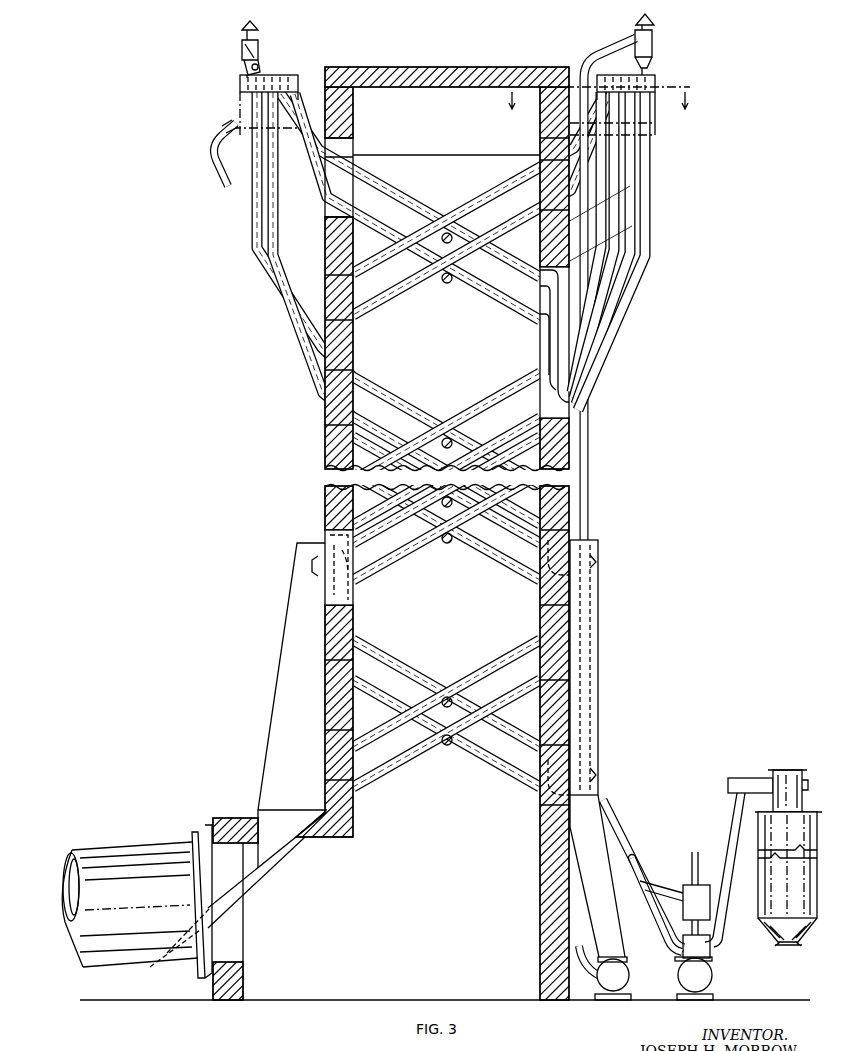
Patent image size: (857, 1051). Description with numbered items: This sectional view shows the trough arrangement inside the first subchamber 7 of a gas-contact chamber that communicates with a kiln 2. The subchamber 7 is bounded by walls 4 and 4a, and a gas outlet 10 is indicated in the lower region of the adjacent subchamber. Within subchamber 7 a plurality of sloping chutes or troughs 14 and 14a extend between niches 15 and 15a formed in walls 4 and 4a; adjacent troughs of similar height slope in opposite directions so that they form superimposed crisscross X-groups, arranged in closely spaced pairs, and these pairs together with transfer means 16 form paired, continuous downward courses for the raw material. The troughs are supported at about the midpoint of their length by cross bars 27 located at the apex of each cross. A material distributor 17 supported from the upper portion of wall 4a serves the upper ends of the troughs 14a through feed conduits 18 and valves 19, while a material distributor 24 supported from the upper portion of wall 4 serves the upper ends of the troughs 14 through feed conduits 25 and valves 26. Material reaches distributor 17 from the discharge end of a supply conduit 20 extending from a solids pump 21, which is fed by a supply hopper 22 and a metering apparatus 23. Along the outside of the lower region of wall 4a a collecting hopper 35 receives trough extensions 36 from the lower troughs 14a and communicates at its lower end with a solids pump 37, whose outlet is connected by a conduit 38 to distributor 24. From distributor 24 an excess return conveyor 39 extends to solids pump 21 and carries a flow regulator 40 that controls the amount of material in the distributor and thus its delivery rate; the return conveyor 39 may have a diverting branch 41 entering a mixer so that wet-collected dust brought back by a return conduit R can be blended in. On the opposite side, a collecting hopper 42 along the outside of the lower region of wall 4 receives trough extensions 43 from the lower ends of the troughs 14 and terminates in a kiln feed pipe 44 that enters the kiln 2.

The kiln 2 is at (118, 846).
The wall 4 is at (325, 448).
The wall 4a is at (570, 440).
The subchamber 7 is at (428, 500).
The gas outlet 10 is at (522, 123).
The troughs 14 is at (380, 197).
The troughs 14a is at (494, 200).
The niches 15 is at (325, 534).
The niches 15a is at (570, 406).
The transfer means 16 is at (556, 346).
The material distributor 17 is at (656, 82).
The feed conduits 18 is at (636, 190).
The valves 19 is at (655, 88).
The supply conduit 20 is at (606, 55).
The solids pump 21 is at (713, 978).
The supply hopper 22 is at (815, 872).
The metering apparatus 23 is at (787, 765).
The material distributor 24 is at (240, 82).
The feed conduits 25 is at (272, 222).
The valves 26 is at (300, 97).
The cross bars 27 is at (447, 284).
The collecting hopper 35 is at (599, 586).
The trough extensions 36 is at (596, 562).
The solids pump 37 is at (629, 972).
The conduit 38 is at (257, 66).
The excess return conveyor 39 is at (215, 165).
The flow regulator 40 is at (236, 126).
The diverting branch 41 is at (650, 892).
The collecting hopper 42 is at (284, 612).
The trough extensions 43 is at (312, 566).
The kiln feed pipe 44 is at (260, 864).
The return conduit R is at (699, 855).